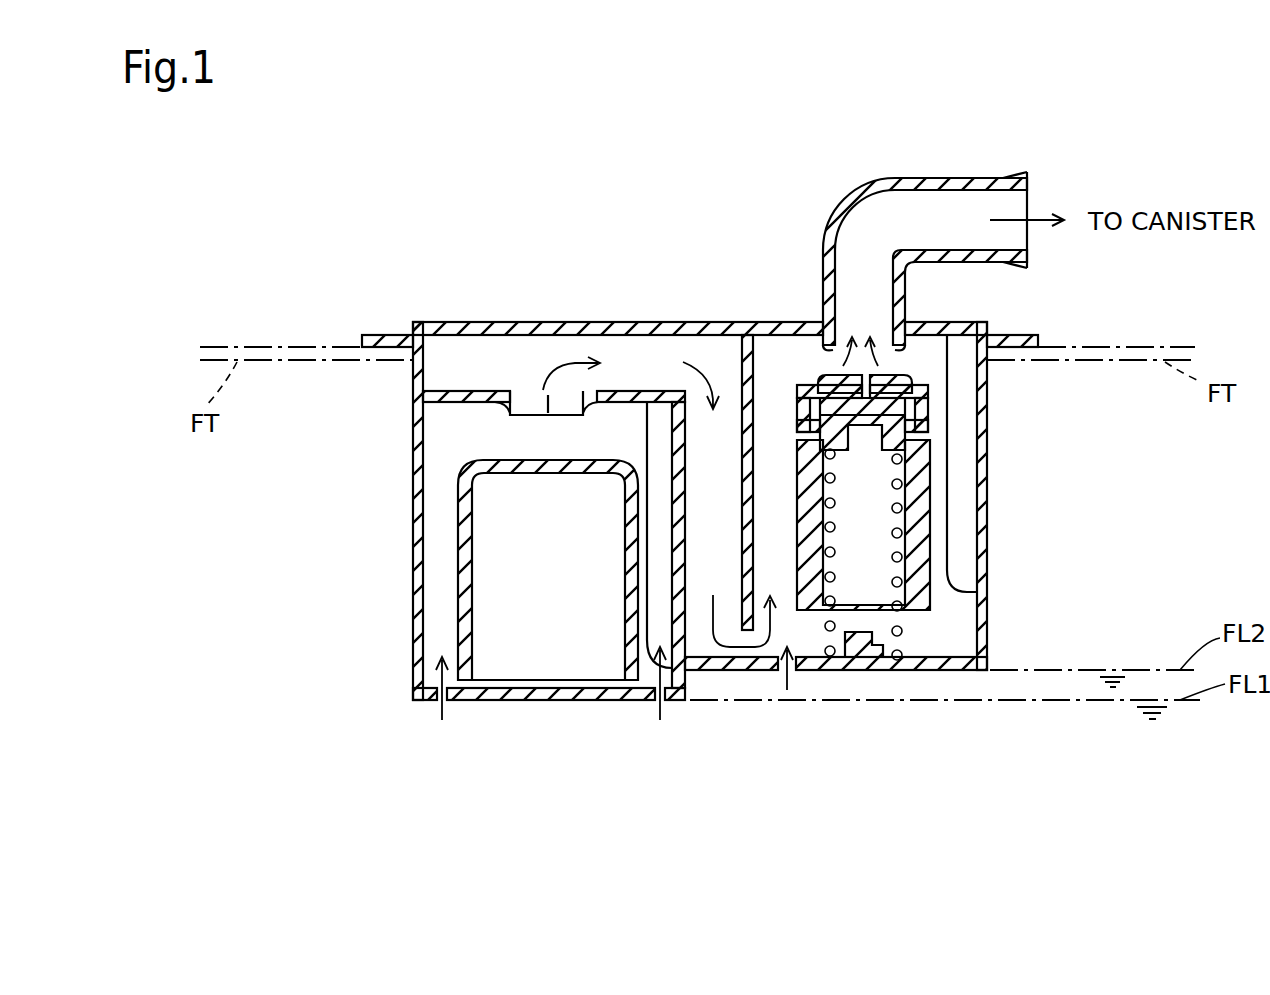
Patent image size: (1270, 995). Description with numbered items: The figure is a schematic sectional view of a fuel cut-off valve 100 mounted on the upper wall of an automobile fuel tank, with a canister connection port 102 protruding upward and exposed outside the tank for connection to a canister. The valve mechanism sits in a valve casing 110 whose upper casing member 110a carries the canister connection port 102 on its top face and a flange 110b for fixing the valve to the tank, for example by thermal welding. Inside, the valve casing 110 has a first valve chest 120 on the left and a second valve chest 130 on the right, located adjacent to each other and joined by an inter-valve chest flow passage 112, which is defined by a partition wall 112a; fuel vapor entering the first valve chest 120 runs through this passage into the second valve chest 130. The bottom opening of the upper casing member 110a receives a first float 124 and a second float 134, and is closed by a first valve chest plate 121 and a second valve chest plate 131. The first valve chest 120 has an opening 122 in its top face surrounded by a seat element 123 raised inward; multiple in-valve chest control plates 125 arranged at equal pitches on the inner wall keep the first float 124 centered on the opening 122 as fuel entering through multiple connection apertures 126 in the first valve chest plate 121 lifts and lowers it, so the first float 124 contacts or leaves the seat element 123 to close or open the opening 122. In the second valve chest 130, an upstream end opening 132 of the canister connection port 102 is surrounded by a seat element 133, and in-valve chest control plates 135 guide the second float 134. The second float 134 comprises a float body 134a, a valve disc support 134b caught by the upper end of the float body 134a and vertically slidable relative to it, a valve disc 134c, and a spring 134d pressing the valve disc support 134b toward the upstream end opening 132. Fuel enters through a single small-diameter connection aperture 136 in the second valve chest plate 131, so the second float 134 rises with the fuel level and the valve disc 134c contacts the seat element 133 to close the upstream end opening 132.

The fuel cut-off valve 100 is at (373, 193).
The canister connection port 102 is at (975, 178).
The valve casing 110 is at (583, 306).
The upper casing member 110a is at (692, 322).
The flange 110b is at (1012, 335).
The inter-valve chest flow passage 112 is at (733, 466).
The partition wall 112a is at (740, 558).
The first valve chest 120 is at (433, 520).
The first valve chest plate 121 is at (523, 700).
The opening 122 is at (547, 393).
The seat element 123 is at (495, 422).
The first float 124 is at (460, 607).
The in-valve chest control plates 125 is at (655, 542).
The connection apertures 126 is at (634, 704).
The second valve chest 130 is at (950, 627).
The second valve chest plate 131 is at (920, 670).
The upstream end opening 132 is at (847, 352).
The seat element 133 is at (895, 350).
The second float 134 is at (930, 520).
The float body 134a is at (812, 600).
The valve disc support 134b is at (930, 413).
The valve disc 134c is at (823, 372).
The spring 134d is at (832, 660).
The in-valve chest control plates 135 is at (957, 435).
The connection aperture 136 is at (783, 670).